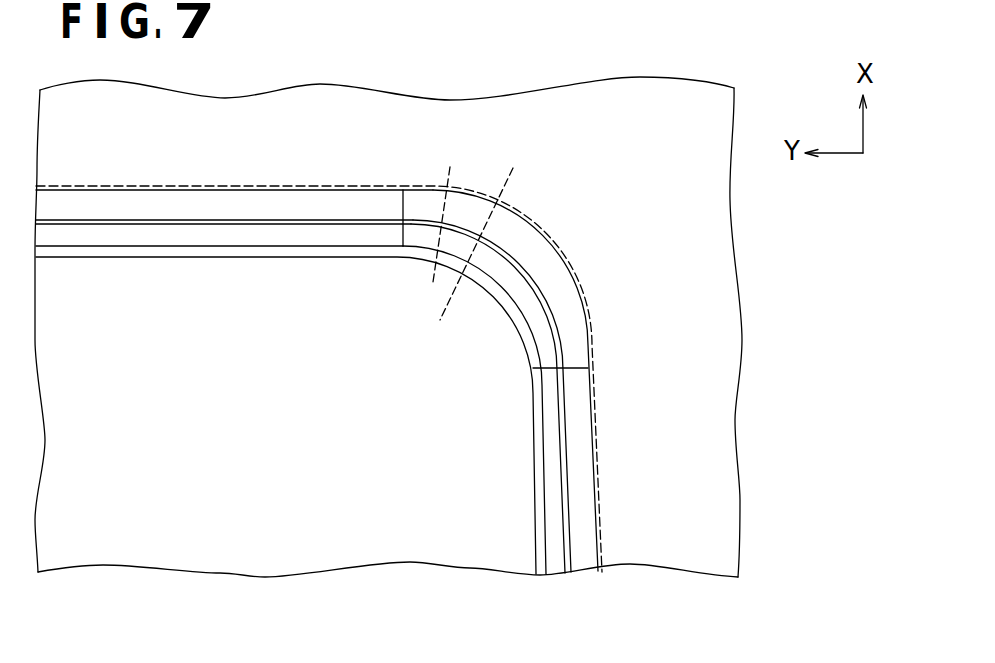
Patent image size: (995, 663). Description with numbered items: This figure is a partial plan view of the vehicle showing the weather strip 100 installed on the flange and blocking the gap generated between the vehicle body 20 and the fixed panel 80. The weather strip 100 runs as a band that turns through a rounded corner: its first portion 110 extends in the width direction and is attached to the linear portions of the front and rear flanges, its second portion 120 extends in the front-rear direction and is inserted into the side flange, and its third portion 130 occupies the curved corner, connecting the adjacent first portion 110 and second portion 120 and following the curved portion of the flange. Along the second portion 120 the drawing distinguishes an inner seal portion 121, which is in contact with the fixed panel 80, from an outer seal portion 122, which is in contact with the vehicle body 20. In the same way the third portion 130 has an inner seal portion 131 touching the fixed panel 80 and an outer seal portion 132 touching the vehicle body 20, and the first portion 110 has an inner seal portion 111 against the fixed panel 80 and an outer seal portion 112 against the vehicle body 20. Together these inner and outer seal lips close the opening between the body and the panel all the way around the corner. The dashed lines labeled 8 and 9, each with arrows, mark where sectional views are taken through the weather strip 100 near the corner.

The cross-section line VIII-VIII 8 is at (513, 168).
The cross-section line IX-IX 9 is at (450, 167).
The vehicle body 20 is at (722, 210).
The fixed panel 80 is at (176, 512).
The weather strip 100 is at (135, 248).
The first portion 110 is at (494, 381).
The inner seal portion 111 is at (550, 463).
The outer seal portion 112 is at (578, 492).
The second portion 120 is at (234, 269).
The inner seal portion 121 is at (261, 234).
The outer seal portion 122 is at (204, 212).
The third portion 130 is at (478, 399).
The inner seal portion 131 is at (527, 377).
The outer seal portion 132 is at (543, 353).